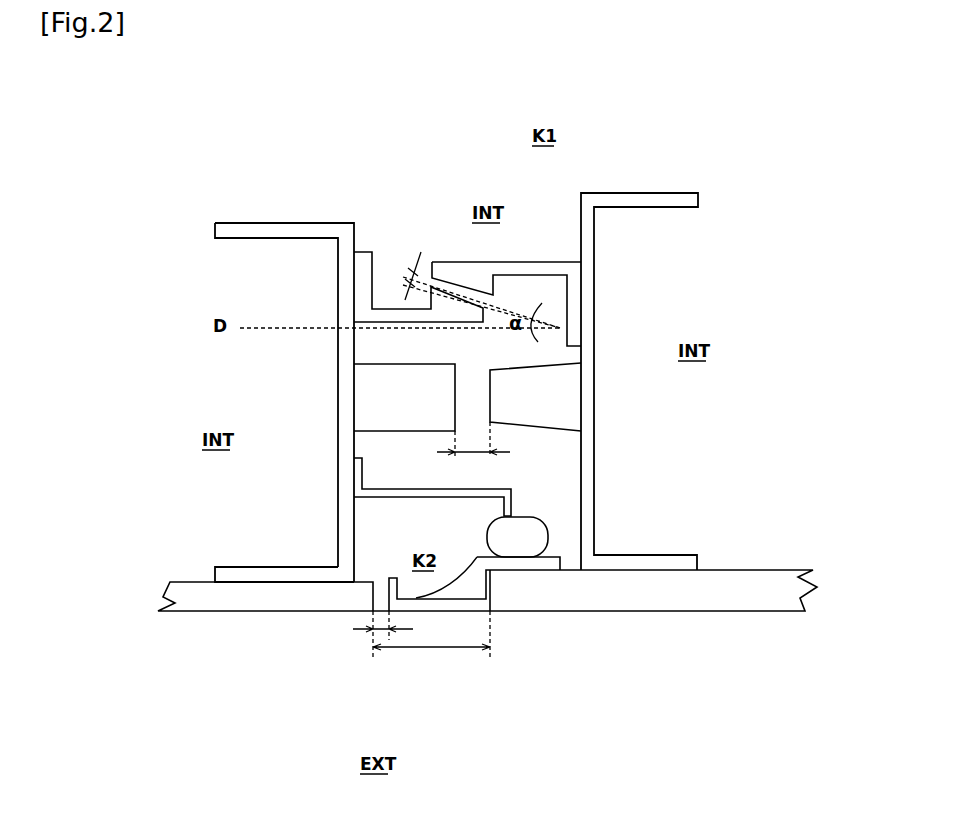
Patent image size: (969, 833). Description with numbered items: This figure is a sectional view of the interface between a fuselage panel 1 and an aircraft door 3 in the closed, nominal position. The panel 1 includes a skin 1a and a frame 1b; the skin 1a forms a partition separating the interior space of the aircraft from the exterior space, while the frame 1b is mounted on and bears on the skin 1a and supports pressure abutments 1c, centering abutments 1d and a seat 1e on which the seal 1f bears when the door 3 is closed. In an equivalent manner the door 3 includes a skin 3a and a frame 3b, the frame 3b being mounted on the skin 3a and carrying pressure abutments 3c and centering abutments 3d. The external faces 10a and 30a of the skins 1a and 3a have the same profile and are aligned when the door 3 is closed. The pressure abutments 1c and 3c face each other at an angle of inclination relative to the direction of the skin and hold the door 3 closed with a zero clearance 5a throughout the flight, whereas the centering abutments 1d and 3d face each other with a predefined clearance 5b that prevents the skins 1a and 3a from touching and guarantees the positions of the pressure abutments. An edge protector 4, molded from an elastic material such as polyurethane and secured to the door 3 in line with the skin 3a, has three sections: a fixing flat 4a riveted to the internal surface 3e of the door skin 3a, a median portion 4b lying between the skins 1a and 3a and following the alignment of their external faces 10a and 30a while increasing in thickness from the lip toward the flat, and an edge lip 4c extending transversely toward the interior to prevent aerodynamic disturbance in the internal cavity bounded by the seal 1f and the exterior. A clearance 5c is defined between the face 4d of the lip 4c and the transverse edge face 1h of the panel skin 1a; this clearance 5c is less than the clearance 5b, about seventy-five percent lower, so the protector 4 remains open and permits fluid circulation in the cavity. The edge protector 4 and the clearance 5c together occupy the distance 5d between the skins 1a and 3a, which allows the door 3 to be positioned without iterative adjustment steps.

The panel 1 is at (117, 236).
The skin 1a is at (227, 593).
The frame 1b is at (305, 571).
The pressure abutments 1c is at (450, 316).
The centering abutments 1d is at (397, 413).
The seat 1e is at (435, 488).
The seal 1f is at (487, 546).
The transverse edge face 1h is at (365, 593).
The external face 10a is at (257, 611).
The door 3 is at (842, 284).
The skin 3a is at (698, 585).
The frame 3b is at (595, 560).
The pressure abutments 3c is at (464, 268).
The centering abutments 3d is at (548, 400).
The internal surface 3e is at (737, 570).
The external face 30a is at (675, 613).
The edge protector 4 is at (633, 665).
The fixing flat 4a is at (533, 565).
The median portion 4b is at (462, 592).
The edge lip 4c is at (400, 587).
The face 4d is at (383, 592).
The clearance 5a is at (421, 265).
The clearance 5b is at (487, 442).
The clearance 5c is at (367, 634).
The distance 5d is at (431, 642).